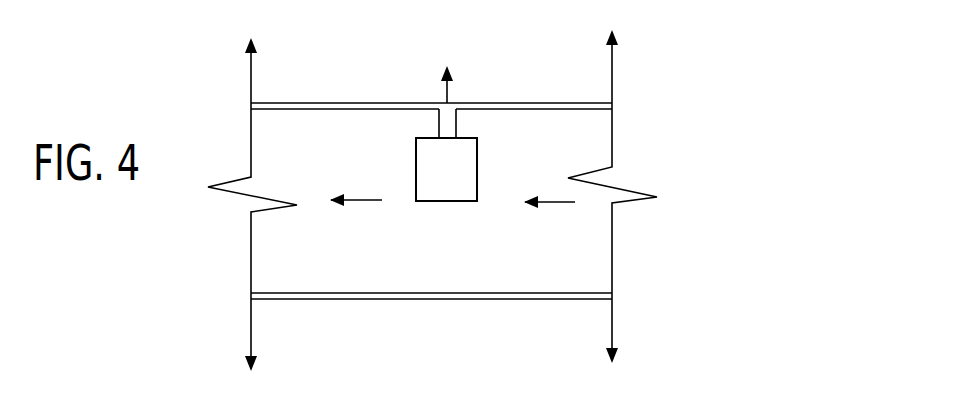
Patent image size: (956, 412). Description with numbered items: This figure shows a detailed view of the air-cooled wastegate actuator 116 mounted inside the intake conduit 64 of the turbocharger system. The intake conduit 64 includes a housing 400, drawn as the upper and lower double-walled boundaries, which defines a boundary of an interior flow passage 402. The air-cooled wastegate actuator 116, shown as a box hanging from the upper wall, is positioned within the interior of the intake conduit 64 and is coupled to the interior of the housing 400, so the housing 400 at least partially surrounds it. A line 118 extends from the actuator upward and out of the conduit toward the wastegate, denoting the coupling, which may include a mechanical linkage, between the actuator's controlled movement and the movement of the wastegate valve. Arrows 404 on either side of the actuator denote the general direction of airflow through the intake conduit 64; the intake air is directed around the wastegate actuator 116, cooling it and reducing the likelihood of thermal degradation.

The intake conduit 64 is at (394, 80).
The housing 400 is at (363, 102).
The interior flow passage 402 is at (372, 165).
The arrows 404 is at (352, 200).
The air-cooled wastegate actuator 116 is at (463, 180).
The line 118 is at (452, 89).